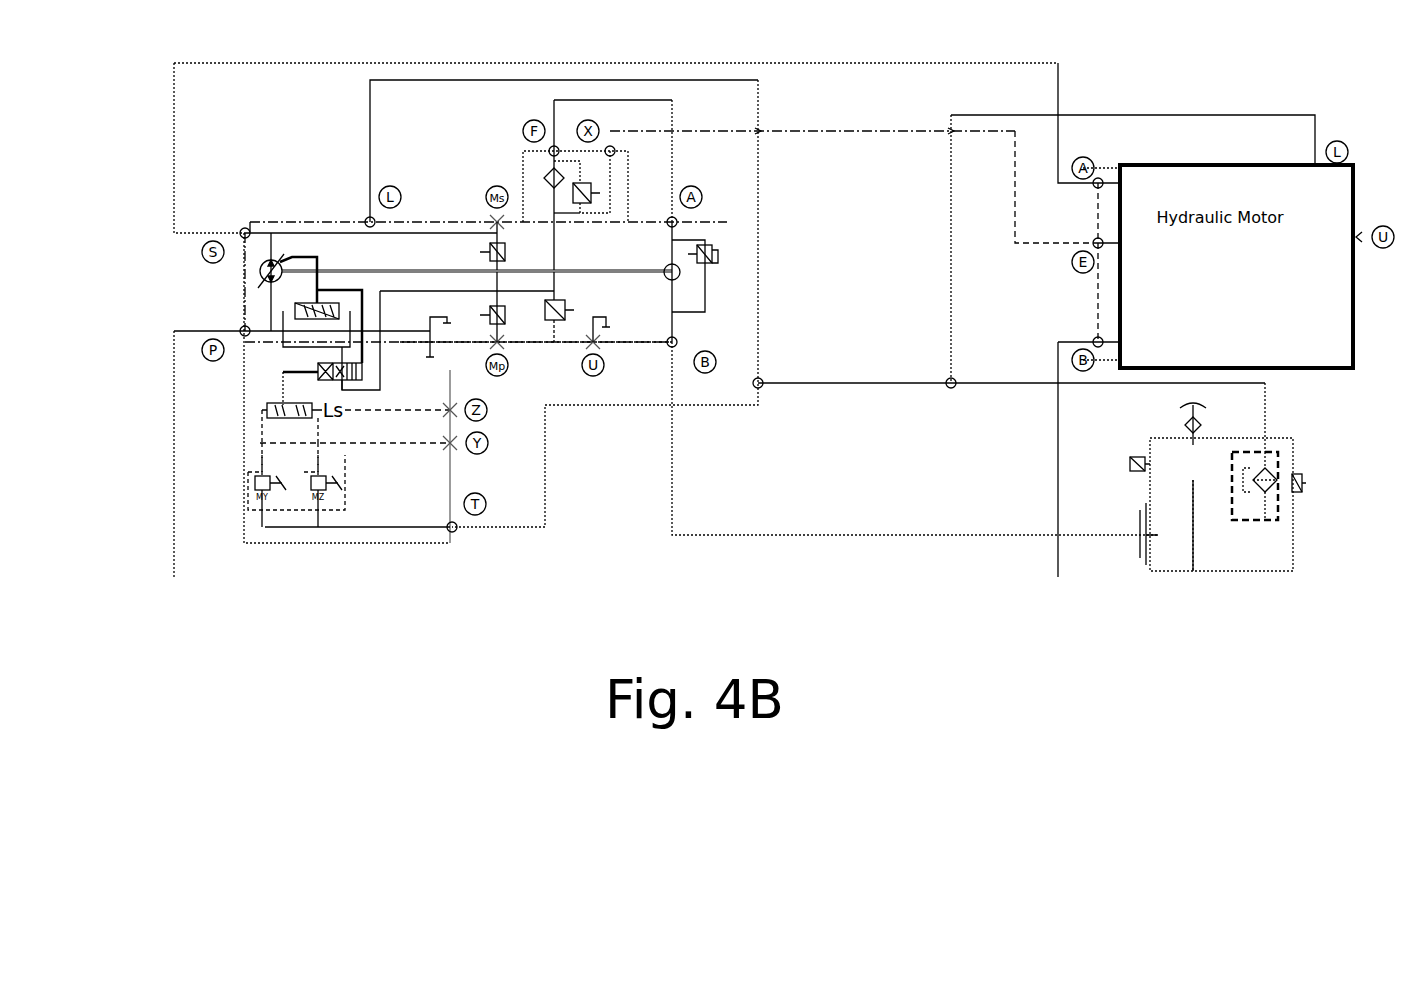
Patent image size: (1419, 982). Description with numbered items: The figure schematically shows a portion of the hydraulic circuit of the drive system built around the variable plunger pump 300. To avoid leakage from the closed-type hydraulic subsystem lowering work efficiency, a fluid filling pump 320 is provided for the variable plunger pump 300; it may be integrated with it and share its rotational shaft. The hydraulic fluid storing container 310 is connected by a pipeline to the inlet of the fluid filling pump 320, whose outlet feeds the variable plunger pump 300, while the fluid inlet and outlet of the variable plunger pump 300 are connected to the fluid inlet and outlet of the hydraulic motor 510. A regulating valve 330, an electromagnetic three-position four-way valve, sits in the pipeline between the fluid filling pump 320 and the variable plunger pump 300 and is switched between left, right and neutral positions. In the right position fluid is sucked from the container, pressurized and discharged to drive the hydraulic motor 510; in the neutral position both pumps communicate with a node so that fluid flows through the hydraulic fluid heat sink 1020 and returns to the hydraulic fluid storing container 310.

The variable plunger pump 300 is at (245, 270).
The fluid filling pump 320 is at (680, 279).
The regulating valve 330 is at (322, 372).
The hydraulic motor 510 is at (1236, 283).
The hydraulic fluid storing container 310 is at (1221, 530).
The hydraulic fluid heat sink 1020 is at (1280, 500).